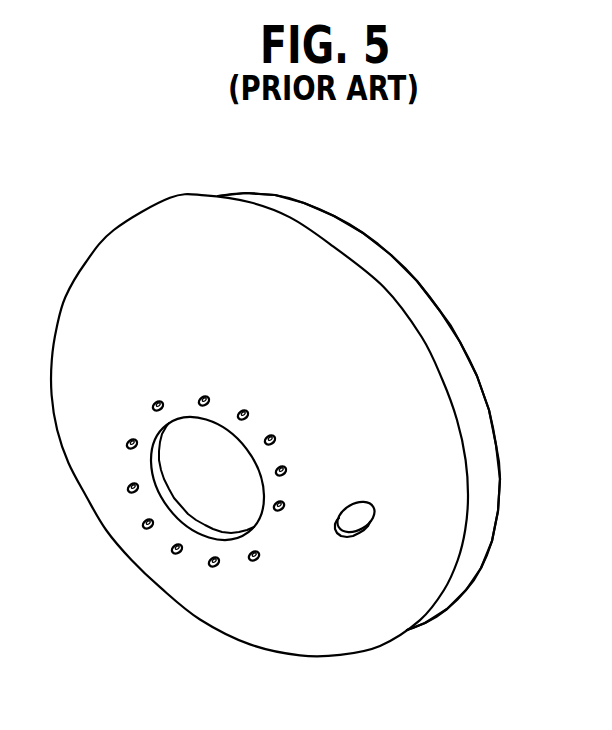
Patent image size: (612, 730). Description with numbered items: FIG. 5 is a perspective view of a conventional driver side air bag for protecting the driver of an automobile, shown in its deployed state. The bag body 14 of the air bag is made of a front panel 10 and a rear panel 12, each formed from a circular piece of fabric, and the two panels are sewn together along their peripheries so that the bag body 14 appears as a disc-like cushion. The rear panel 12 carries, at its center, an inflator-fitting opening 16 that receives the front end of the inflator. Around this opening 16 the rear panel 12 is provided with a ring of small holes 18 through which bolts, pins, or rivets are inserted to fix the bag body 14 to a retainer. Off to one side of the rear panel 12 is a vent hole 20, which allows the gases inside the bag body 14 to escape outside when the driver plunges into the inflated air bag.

The front panel 10 is at (488, 481).
The rear panel 12 is at (411, 612).
The bag body 14 is at (486, 334).
The inflator-fitting opening 16 is at (188, 510).
The small holes 18 is at (204, 401).
The vent hole 20 is at (358, 523).